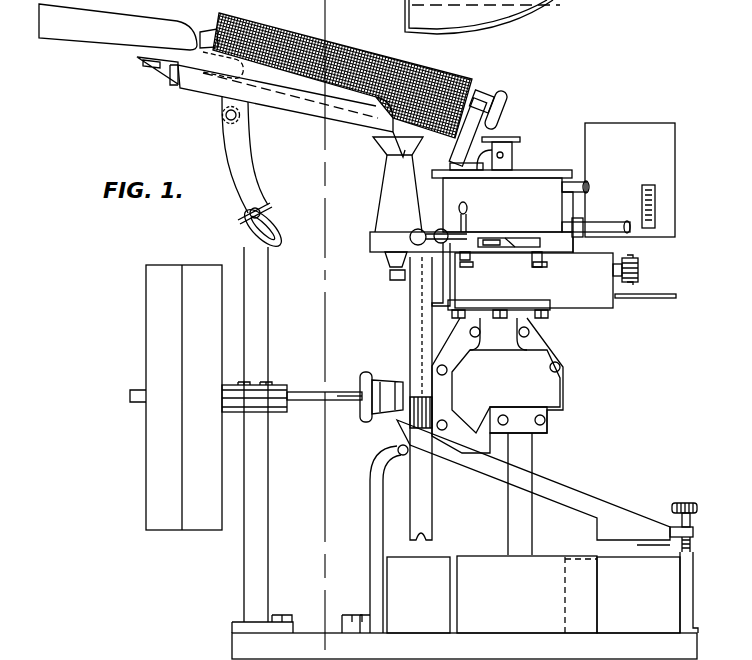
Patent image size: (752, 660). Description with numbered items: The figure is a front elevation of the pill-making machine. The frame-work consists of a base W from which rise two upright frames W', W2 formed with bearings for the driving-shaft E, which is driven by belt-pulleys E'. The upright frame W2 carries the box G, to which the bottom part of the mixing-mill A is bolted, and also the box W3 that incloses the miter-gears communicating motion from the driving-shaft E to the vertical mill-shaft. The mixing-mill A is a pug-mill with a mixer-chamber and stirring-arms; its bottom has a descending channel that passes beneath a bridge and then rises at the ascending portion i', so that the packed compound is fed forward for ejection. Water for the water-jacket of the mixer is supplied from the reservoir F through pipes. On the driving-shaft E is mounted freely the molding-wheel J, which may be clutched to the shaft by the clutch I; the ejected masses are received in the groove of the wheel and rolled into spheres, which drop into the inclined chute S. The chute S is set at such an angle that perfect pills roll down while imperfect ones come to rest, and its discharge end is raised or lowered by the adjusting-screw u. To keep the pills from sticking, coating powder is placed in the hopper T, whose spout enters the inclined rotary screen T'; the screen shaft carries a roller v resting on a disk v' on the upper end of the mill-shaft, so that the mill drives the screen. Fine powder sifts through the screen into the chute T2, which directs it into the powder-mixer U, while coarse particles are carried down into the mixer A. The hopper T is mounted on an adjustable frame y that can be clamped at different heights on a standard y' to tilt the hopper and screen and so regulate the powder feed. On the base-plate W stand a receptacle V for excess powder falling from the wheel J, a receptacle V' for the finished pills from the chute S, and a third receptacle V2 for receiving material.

The hopper T is at (128, 44).
The rotary screen T' is at (342, 85).
The chute T2 is at (281, 92).
The adjustable frame y is at (236, 174).
The standard y' is at (264, 318).
The upright frame W' is at (262, 511).
The belt-pulleys E' is at (176, 397).
The driving-shaft E is at (292, 392).
The clutch I is at (381, 392).
The ascending portion of the channel i' is at (402, 416).
The molding-wheel J is at (431, 505).
The powder-mixer U is at (398, 208).
The mixing-mill A is at (471, 238).
The reservoir F is at (630, 180).
The box G is at (562, 285).
The wheel or roller v is at (479, 126).
The disk v' is at (506, 150).
The box W3 is at (497, 385).
The upright frame W2 is at (508, 530).
The chute S is at (568, 489).
The adjusting-screw u is at (689, 568).
The receptacle V is at (418, 595).
The third receptacle V2 is at (527, 594).
The receptacle V' is at (638, 595).
The base W is at (464, 646).